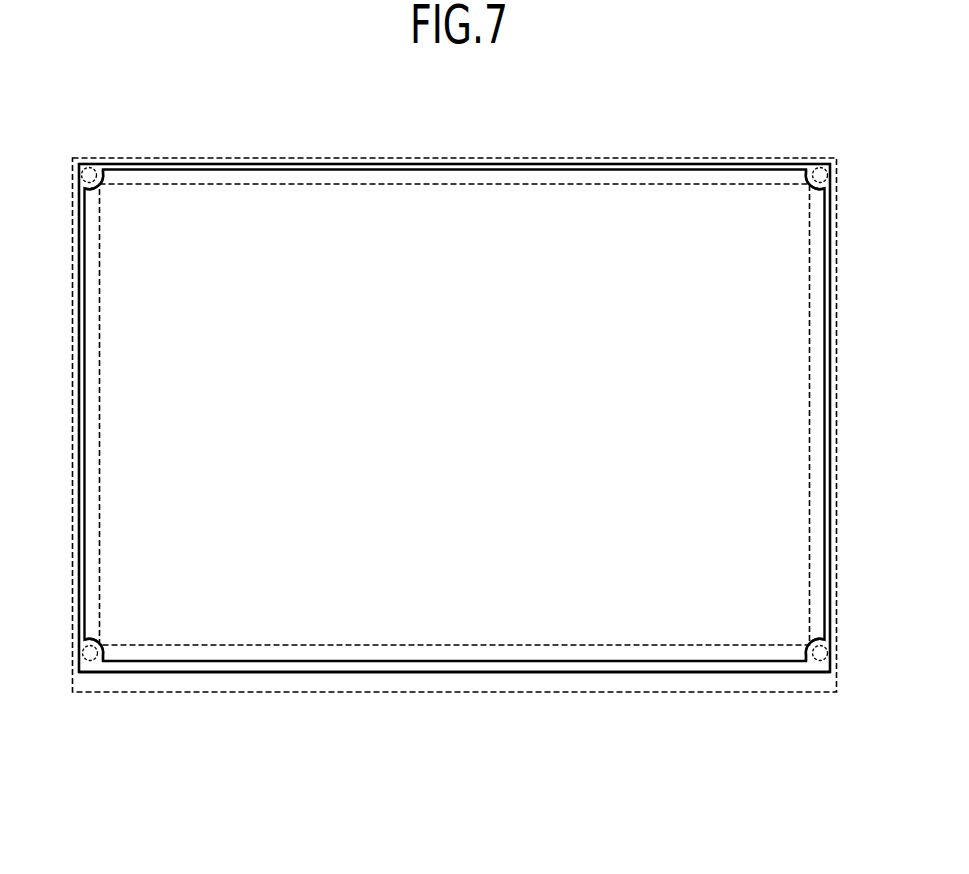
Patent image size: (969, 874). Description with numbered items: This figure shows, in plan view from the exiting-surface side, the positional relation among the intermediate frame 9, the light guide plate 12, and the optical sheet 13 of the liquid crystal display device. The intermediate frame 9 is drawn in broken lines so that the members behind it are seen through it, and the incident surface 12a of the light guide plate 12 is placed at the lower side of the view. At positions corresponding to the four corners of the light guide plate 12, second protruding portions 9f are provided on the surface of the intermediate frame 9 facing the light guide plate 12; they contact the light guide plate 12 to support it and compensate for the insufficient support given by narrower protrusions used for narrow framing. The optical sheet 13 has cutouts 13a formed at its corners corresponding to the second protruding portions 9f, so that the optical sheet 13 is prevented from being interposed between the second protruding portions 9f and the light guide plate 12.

The intermediate frame 9 is at (292, 693).
The second protruding portions 9f is at (88, 167).
The light guide plate 12 is at (415, 164).
The incident surface 12a is at (449, 672).
The optical sheet 13 is at (477, 170).
The cutouts 13a is at (104, 173).